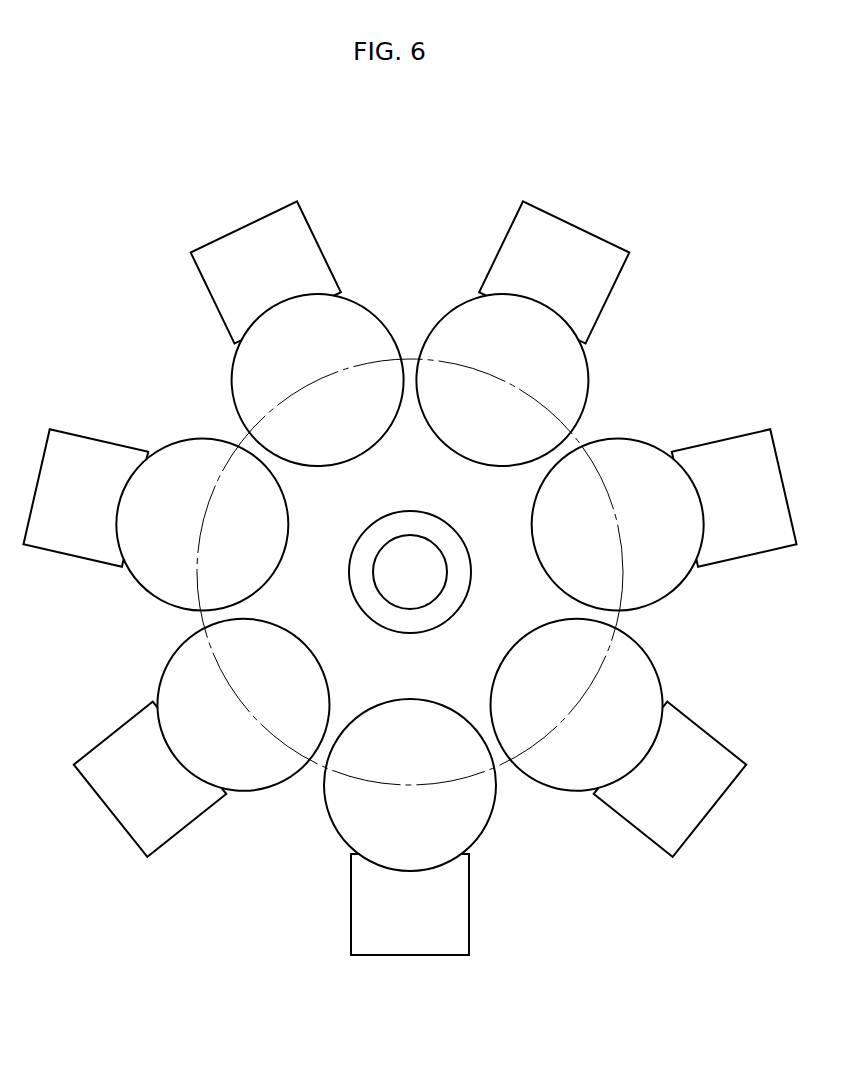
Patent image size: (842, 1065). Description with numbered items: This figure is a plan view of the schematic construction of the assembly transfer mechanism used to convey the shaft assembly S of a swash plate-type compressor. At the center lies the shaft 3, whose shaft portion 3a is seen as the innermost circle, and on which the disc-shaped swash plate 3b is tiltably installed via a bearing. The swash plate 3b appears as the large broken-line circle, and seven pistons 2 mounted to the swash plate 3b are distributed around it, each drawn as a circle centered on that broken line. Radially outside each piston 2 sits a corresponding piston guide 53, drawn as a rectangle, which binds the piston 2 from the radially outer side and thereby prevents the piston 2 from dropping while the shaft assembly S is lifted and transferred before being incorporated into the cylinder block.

The piston 2 is at (325, 810).
The shaft 3 is at (461, 519).
The shaft portion 3a is at (472, 583).
The swash plate 3b is at (503, 763).
The piston guide 53 is at (408, 946).
The shaft assembly S is at (409, 600).